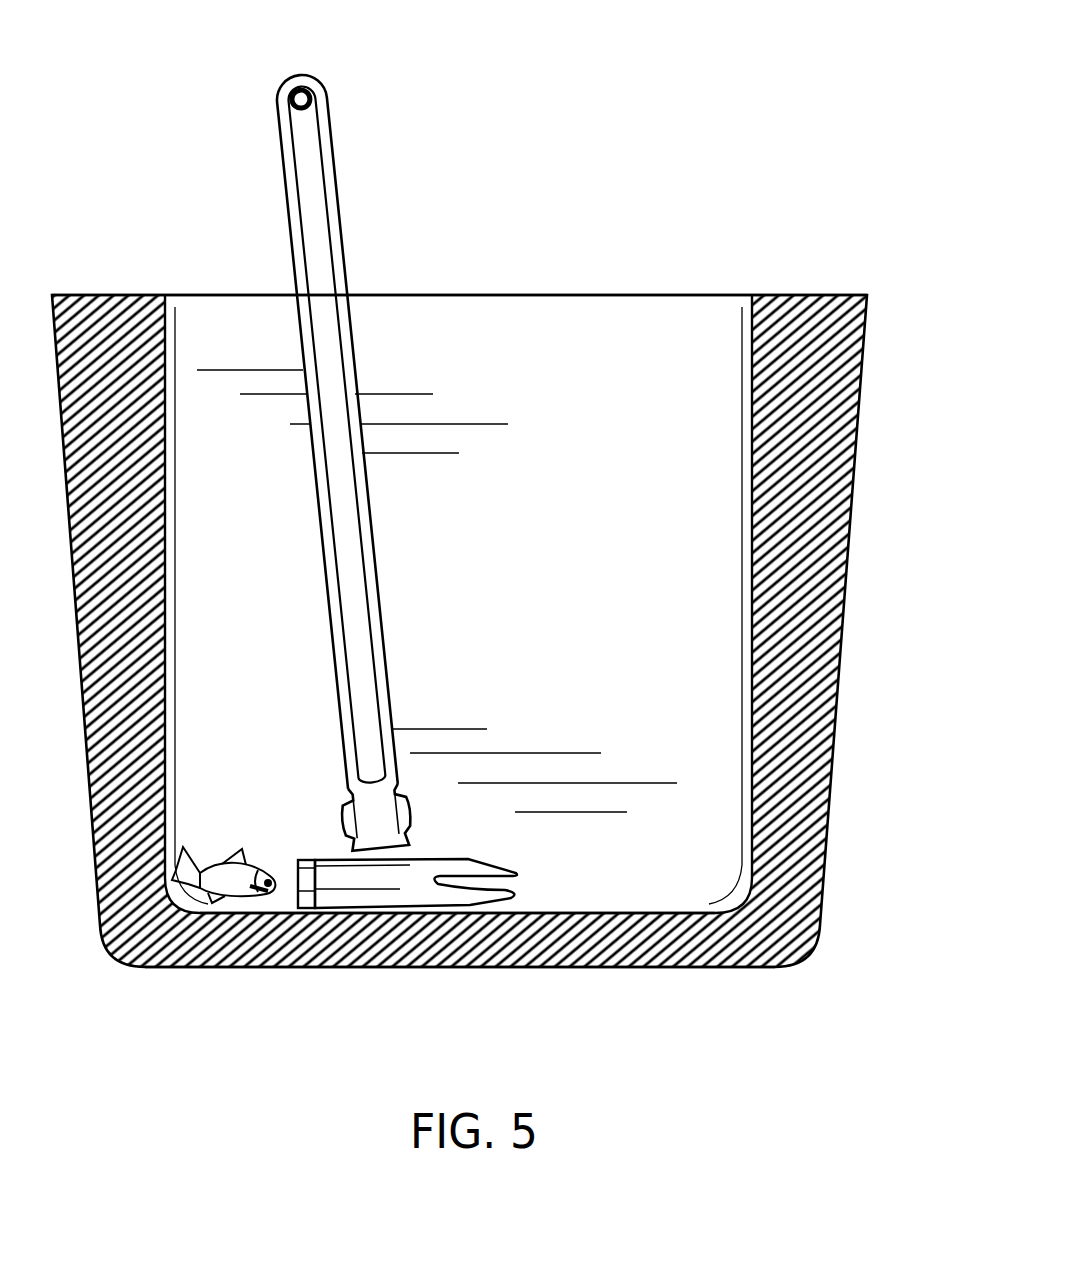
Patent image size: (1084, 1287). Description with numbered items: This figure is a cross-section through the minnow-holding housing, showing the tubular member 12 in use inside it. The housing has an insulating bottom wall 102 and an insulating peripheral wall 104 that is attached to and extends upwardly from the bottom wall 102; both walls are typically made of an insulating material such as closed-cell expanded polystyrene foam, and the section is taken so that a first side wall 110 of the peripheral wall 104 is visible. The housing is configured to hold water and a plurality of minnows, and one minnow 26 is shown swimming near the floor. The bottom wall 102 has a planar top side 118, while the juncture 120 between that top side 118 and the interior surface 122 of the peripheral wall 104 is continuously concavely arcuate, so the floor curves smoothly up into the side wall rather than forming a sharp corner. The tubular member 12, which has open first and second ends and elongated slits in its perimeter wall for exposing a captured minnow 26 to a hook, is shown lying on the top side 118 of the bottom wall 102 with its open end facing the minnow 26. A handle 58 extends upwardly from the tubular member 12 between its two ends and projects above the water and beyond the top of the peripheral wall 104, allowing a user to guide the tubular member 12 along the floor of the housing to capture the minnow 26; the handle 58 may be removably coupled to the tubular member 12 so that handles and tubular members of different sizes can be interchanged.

The tubular member 12 is at (500, 835).
The minnow 26 is at (228, 872).
The handle 58 is at (332, 177).
The bottom wall 102 is at (420, 963).
The peripheral wall 104 is at (843, 616).
The first side wall 110 is at (575, 395).
The top side 118 is at (640, 912).
The juncture 120 is at (745, 898).
The interior surface 122 is at (752, 583).